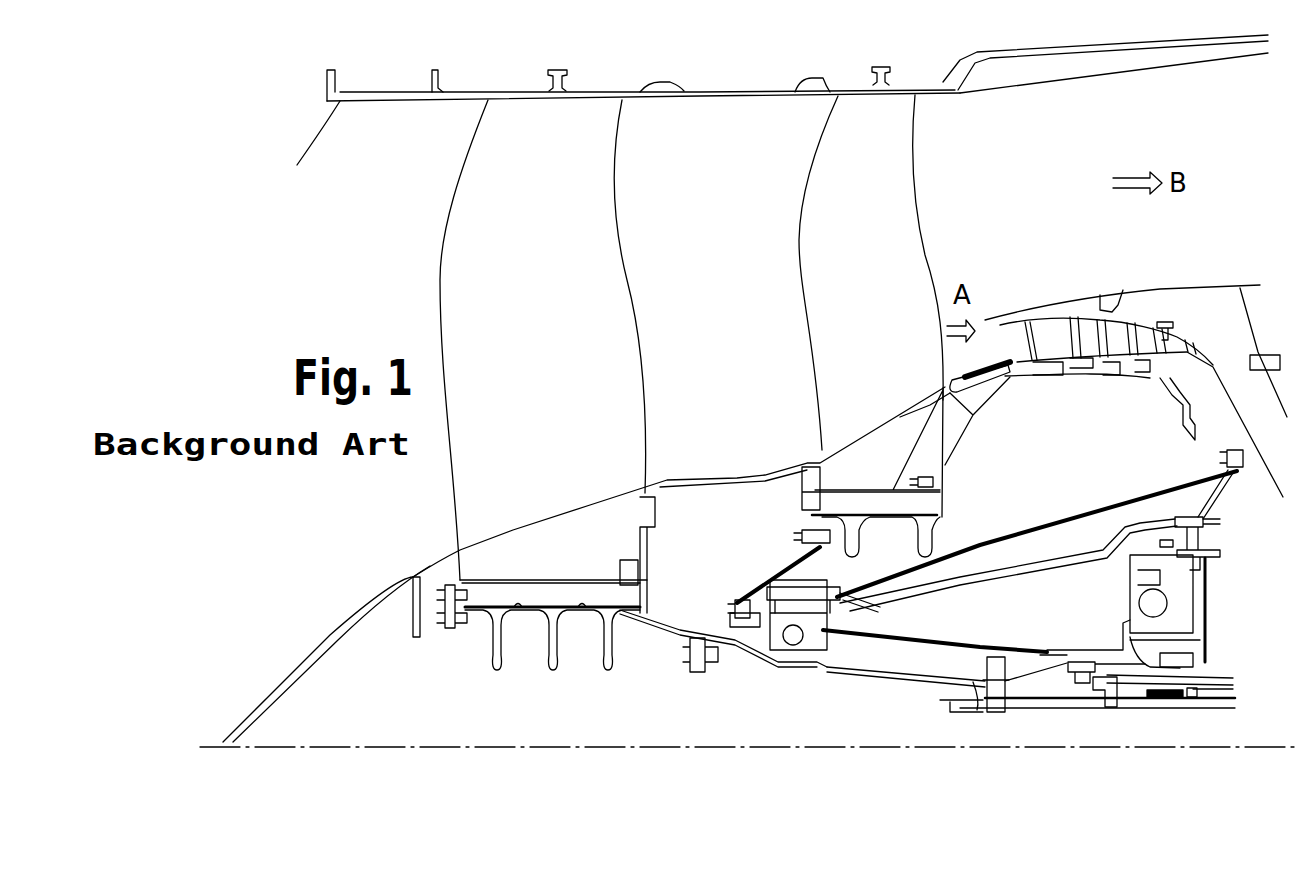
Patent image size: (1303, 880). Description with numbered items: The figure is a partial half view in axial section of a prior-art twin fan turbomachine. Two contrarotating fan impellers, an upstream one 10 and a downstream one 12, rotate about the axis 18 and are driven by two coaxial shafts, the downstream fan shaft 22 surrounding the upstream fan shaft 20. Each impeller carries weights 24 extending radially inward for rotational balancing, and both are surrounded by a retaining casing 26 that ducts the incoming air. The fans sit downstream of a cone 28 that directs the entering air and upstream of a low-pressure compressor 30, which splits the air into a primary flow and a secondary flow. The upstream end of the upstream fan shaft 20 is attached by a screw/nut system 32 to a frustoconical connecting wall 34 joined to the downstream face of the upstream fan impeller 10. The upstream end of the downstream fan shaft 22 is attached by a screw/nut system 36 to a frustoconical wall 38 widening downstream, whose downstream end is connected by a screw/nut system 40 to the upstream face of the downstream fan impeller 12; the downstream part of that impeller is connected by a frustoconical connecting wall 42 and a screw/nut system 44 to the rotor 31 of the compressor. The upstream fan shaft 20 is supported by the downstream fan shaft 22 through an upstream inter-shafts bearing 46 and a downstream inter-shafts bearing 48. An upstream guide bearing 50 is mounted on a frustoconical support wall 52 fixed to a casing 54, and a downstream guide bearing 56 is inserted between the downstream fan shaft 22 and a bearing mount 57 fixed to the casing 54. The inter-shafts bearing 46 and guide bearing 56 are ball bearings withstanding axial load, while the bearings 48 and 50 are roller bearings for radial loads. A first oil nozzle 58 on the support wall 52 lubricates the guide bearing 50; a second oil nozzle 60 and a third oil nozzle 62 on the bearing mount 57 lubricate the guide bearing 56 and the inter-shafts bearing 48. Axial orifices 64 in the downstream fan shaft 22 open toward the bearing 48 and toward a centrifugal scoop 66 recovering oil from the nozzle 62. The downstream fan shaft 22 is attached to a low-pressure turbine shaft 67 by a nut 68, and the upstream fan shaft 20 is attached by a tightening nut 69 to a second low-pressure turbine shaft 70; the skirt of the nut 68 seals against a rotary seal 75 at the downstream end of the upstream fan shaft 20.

The upstream fan impeller 10 is at (595, 327).
The downstream fan impeller 12 is at (893, 192).
The axis 18 is at (603, 750).
The upstream fan shaft 20 is at (903, 678).
The downstream fan shaft 22 is at (977, 640).
The weights 24 is at (505, 650).
The retaining casing 26 is at (748, 91).
The cone 28 is at (312, 660).
The low-pressure compressor 30 is at (1063, 272).
The rotor 31 is at (1112, 378).
The screw/nut system 32 is at (698, 673).
The frustoconical connecting wall 34 is at (662, 630).
The screw/nut system 36 is at (733, 605).
The frustoconical wall 38 is at (760, 587).
The screw/nut system 40 is at (800, 537).
The frustoconical connecting wall 42 is at (975, 414).
The screw/nut system 44 is at (955, 478).
The upstream inter-shafts bearing 46 is at (797, 652).
The downstream inter-shafts bearing 48 is at (1072, 700).
The upstream guide bearing 50 is at (775, 578).
The frustoconical support wall 52 is at (1060, 518).
The casing 54 is at (1243, 473).
The downstream guide bearing 56 is at (1143, 605).
The bearing mount 57 is at (1222, 485).
The first oil nozzle 58 is at (870, 607).
The second oil nozzle 60 is at (1210, 590).
The third oil nozzle 62 is at (1215, 625).
The axial orifices 64 is at (1190, 705).
The centrifugal scoop 66 is at (1187, 662).
The low-pressure turbine shaft 67 is at (1222, 712).
The nut 68 is at (1160, 703).
The tightening nut 69 is at (962, 710).
The second low-pressure turbine shaft 70 is at (1093, 710).
The rotary seal 75 is at (1122, 690).